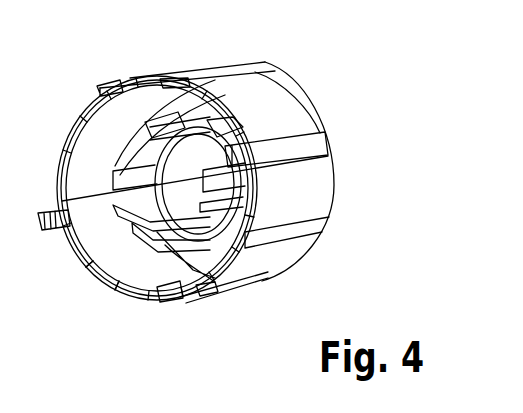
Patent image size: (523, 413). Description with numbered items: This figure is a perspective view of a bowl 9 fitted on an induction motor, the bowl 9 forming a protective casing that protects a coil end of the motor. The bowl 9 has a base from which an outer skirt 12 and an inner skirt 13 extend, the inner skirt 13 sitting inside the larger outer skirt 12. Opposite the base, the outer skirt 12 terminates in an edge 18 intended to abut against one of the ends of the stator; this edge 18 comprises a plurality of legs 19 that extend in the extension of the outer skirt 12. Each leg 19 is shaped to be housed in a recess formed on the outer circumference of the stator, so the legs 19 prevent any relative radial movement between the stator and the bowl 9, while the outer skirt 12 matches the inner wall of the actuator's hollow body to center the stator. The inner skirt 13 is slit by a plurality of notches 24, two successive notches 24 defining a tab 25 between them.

The bowl 9 is at (304, 89).
The outer skirt 12 is at (294, 190).
The inner skirt 13 is at (213, 289).
The edge 18 is at (103, 279).
The leg 19 is at (43, 222).
The notch 24 is at (215, 135).
The tab 25 is at (198, 133).